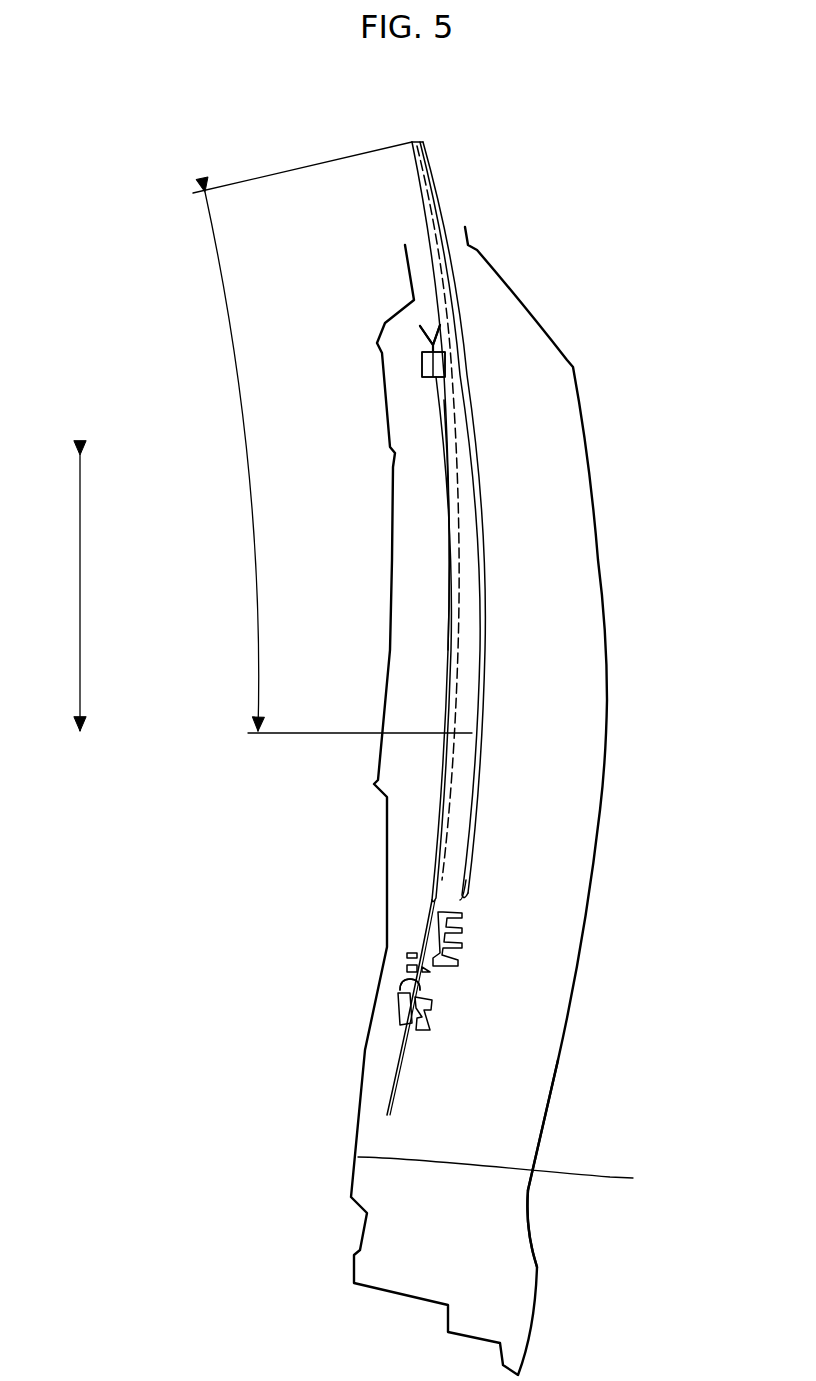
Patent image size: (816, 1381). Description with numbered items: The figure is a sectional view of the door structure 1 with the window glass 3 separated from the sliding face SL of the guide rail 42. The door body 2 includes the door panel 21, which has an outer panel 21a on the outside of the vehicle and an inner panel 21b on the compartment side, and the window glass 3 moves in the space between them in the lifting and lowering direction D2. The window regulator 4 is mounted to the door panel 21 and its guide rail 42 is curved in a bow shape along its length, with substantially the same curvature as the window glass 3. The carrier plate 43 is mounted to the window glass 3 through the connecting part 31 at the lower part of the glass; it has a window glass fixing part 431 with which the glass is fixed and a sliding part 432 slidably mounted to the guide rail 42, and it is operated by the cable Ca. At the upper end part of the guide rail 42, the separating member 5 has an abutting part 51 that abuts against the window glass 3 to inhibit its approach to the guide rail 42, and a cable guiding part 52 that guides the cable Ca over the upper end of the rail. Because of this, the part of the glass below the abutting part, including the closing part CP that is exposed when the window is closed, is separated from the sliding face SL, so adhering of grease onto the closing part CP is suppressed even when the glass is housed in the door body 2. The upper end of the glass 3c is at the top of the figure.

The door structure 1 is at (724, 166).
The door body 2 is at (622, 593).
The door panel 21 is at (690, 1103).
The outer panel 21a is at (550, 1095).
The inner panel 21b is at (540, 1176).
The window glass 3 is at (474, 419).
The weather strip upper end 3c is at (420, 142).
The connecting part 31 is at (462, 887).
The window regulator 4 is at (410, 816).
The guide rail 42 is at (441, 526).
The carrier plate 43 is at (394, 1005).
The window glass fixing part 431 is at (458, 942).
The sliding part 432 is at (412, 980).
The separating member 5 is at (418, 365).
The abutting part 51 is at (446, 360).
The cable guiding part 52 is at (422, 333).
The cable Ca is at (427, 328).
The closing part CP is at (252, 440).
The lifting and lowering direction D2 is at (80, 567).
The sliding face SL is at (450, 648).